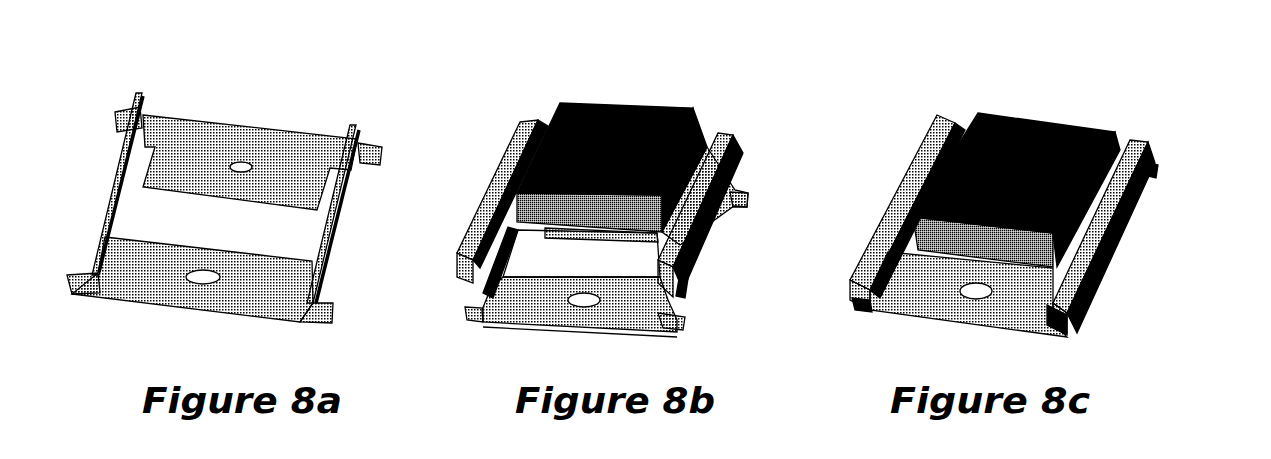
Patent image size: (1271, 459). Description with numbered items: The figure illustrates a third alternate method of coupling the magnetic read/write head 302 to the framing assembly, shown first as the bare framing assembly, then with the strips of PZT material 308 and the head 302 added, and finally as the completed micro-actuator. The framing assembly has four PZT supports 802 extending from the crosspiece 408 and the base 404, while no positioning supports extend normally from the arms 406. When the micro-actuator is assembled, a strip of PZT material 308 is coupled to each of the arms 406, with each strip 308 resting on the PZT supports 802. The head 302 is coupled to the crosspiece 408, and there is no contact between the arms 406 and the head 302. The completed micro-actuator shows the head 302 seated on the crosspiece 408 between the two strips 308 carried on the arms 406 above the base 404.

In FIG. 8B, the magnetic read/write head 302 is at (598, 104).
In FIG. 8C, the magnetic read/write head 302 is at (1054, 125).
In FIG. 8B, the strip of PZT material 308 is at (527, 119).
In FIG. 8C, the strip of PZT material 308 is at (895, 205).
In FIG. 8A, the base 404 is at (162, 296).
In FIG. 8B, the base 404 is at (705, 320).
In FIG. 8C, the base 404 is at (962, 304).
In FIG. 8A, the arm 406 is at (117, 172).
In FIG. 8B, the arm 406 is at (487, 285).
In FIG. 8C, the arm 406 is at (927, 171).
In FIG. 8A, the crosspiece 408 is at (256, 131).
In FIG. 8B, the crosspiece 408 is at (573, 327).
In FIG. 8A, the PZT support 802 is at (124, 103).
In FIG. 8B, the PZT support 802 is at (735, 203).
In FIG. 8C, the PZT support 802 is at (1158, 175).